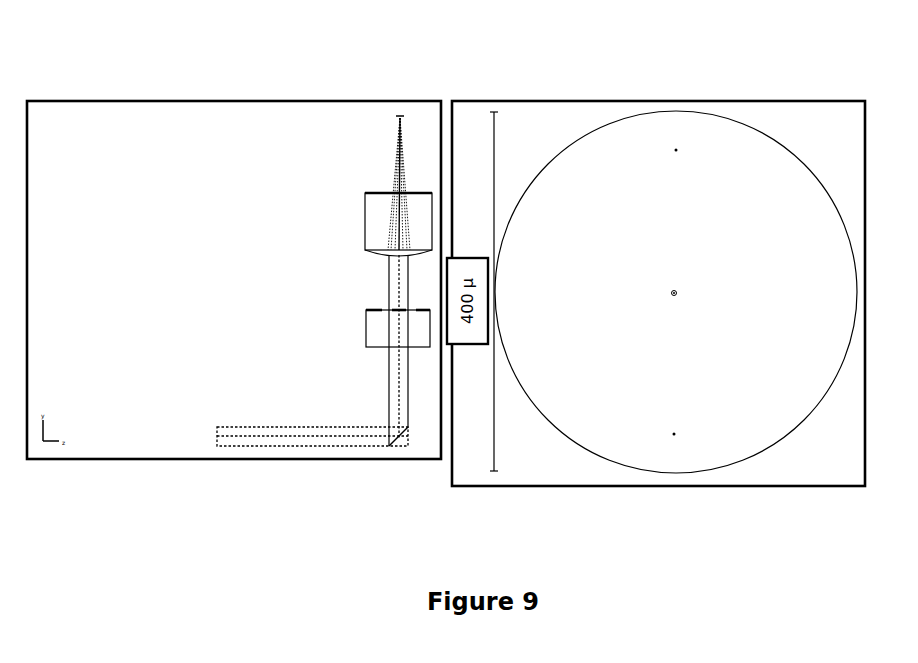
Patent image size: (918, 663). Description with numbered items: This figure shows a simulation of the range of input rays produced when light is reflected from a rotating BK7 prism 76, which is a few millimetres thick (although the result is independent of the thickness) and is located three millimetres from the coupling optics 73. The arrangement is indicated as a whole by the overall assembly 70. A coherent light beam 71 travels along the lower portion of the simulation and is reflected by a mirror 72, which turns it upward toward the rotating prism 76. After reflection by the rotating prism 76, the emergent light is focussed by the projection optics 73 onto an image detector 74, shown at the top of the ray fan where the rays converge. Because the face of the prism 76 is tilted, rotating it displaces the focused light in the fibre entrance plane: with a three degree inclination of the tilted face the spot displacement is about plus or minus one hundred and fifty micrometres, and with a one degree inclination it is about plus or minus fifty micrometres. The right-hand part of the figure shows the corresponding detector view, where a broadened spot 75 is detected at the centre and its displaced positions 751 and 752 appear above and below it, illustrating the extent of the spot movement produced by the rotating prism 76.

The optical device 70 is at (280, 89).
The coherent light beam 71 is at (300, 465).
The mirror 72 is at (421, 378).
The coupling optics 73 is at (367, 190).
The image detector 74 is at (363, 133).
The rotating BK7 prism 76 is at (362, 332).
The broadened spot 75 is at (634, 312).
The broadened spot 751 is at (634, 168).
The broadened spot 752 is at (630, 424).